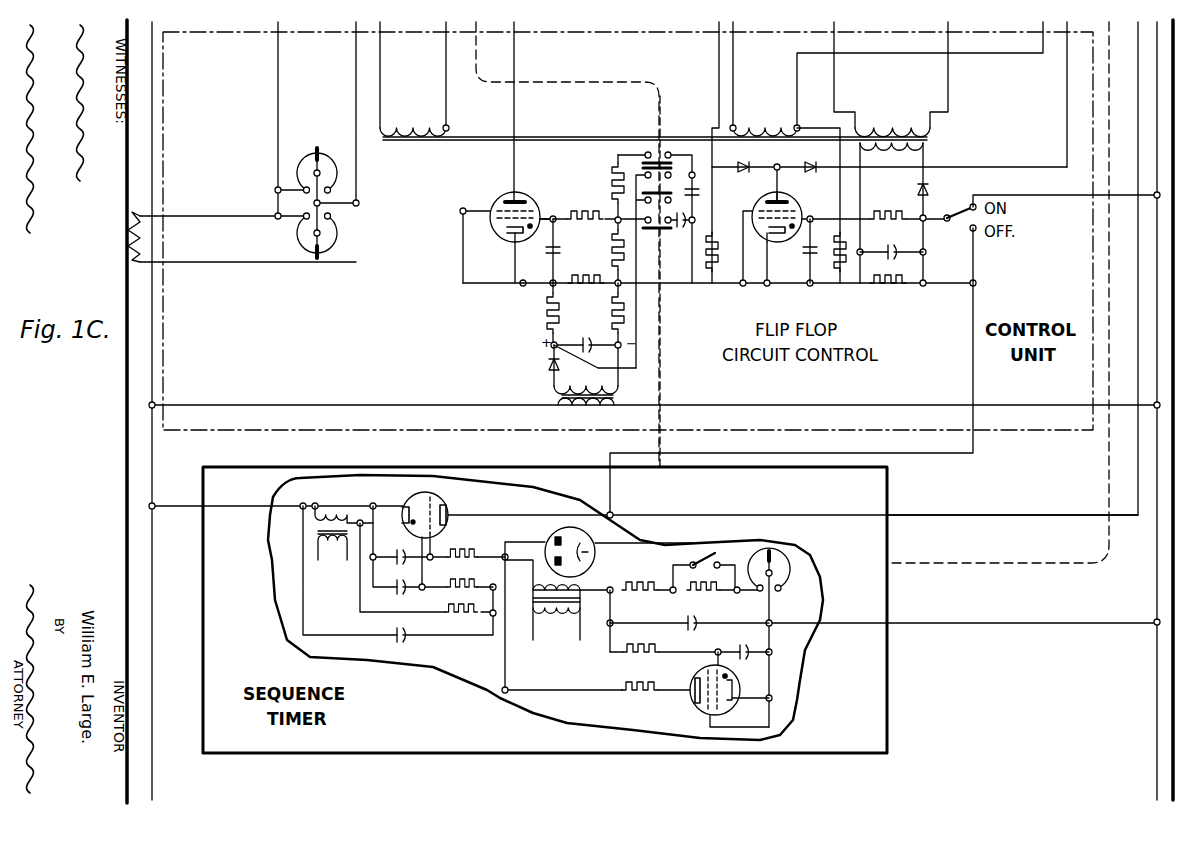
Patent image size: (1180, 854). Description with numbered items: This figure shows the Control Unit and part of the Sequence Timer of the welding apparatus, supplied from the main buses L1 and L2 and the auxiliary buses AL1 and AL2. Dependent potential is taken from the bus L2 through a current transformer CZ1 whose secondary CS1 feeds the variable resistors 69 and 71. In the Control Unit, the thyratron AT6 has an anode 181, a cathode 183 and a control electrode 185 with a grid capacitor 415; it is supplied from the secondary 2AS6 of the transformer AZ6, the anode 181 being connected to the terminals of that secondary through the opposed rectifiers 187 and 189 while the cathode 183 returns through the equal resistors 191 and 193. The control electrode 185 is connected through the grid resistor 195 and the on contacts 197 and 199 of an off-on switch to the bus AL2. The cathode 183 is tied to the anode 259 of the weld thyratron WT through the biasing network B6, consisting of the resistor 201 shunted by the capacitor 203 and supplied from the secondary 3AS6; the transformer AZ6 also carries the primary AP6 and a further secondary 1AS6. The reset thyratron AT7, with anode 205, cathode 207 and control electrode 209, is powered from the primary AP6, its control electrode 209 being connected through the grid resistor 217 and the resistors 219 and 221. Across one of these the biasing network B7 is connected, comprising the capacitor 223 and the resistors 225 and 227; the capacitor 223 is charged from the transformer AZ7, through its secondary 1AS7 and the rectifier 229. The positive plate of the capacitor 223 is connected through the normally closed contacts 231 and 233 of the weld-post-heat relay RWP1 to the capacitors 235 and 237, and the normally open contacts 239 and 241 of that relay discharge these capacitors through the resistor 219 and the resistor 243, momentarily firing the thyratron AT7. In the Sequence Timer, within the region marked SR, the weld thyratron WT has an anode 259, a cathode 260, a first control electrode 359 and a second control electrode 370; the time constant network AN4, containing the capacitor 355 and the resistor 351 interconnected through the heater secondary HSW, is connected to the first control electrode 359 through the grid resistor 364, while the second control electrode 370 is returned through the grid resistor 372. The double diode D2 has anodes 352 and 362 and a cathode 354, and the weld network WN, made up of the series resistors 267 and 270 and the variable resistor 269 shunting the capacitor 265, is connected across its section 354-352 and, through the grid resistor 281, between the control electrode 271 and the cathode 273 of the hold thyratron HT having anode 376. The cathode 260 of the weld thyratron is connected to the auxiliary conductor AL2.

The variable resistor 71 is at (329, 146).
The variable resistor 69 is at (306, 234).
The anode 205 is at (511, 195).
The cathode 207 is at (512, 237).
The control electrode 209 is at (540, 215).
The grid resistor 217 is at (597, 214).
The resistor 219 is at (612, 240).
The resistor 221 is at (604, 270).
The biasing capacitor 223 is at (600, 329).
The resistor 225 is at (617, 300).
The resistor 227 is at (549, 311).
The rectifier 229 is at (548, 364).
The normally closed contact 233 is at (645, 162).
The normally open contact 241 is at (667, 164).
The resistor 243 is at (617, 178).
The normally closed contact 231 is at (672, 200).
The capacitor 235 is at (652, 228).
The capacitor 237 is at (700, 192).
The normally open contact 239 is at (652, 245).
The anode 181 is at (771, 196).
The cathode 183 is at (769, 240).
The grid capacitor 415 is at (781, 270).
The control electrode 185 is at (800, 216).
The rectifier 187 is at (756, 160).
The rectifier 189 is at (818, 160).
The cathode resistor 191 is at (713, 275).
The cathode resistor 193 is at (841, 275).
The grid resistor 195 is at (905, 203).
The on contact 197 is at (956, 208).
The on contact 199 is at (975, 193).
The biasing resistor 201 is at (878, 289).
The biasing capacitor 203 is at (898, 246).
The first control electrode 359 is at (420, 494).
The second control electrode 370 is at (435, 502).
The anode 259 is at (445, 520).
The cathode 260 is at (410, 503).
The anode 362 is at (555, 540).
The anode 352 is at (555, 560).
The cathode 354 is at (596, 553).
The grid resistor 372 is at (483, 558).
The grid resistor 364 is at (483, 588).
The capacitor 355 is at (393, 632).
The resistor 351 is at (477, 624).
The resistor 267 is at (658, 587).
The resistor 270 is at (724, 586).
The variable resistor 269 is at (795, 580).
The grid resistor 281 is at (661, 652).
The capacitor 265 is at (706, 633).
The cathode 273 is at (728, 678).
The control electrode 271 is at (724, 706).
The anode 376 is at (695, 700).
The primary winding AP6 is at (428, 127).
The weld-post-heat relay RWP1 is at (510, 84).
The secondary winding 2AS6 is at (769, 127).
The relay coil 1AS6 is at (893, 127).
The transformer AZ6 is at (989, 142).
The biasing secondary winding 3AS6 is at (916, 146).
The reset thyratron AT7 is at (522, 200).
The thyratron AT6 is at (784, 200).
The biasing network B6 is at (918, 273).
The biasing network B7 is at (588, 378).
The biasing secondary winding 1AS7 is at (556, 387).
The transformer AZ7 is at (655, 398).
The heater transformer secondary windings HSW is at (344, 507).
The hold thyratron HT is at (332, 556).
The weld thyratron WT is at (449, 512).
The time constant network AN4 is at (445, 633).
The double diode D2 is at (574, 528).
The weld network WN is at (740, 617).
The main bus L1 is at (1157, 537).
The main bus L2 is at (126, 360).
The auxiliary bus AL1 is at (153, 556).
The auxiliary bus AL2 is at (1156, 635).
The sequence relay SR is at (1109, 458).
The current transformer CZ1 is at (128, 214).
The secondary winding CS1 is at (128, 262).